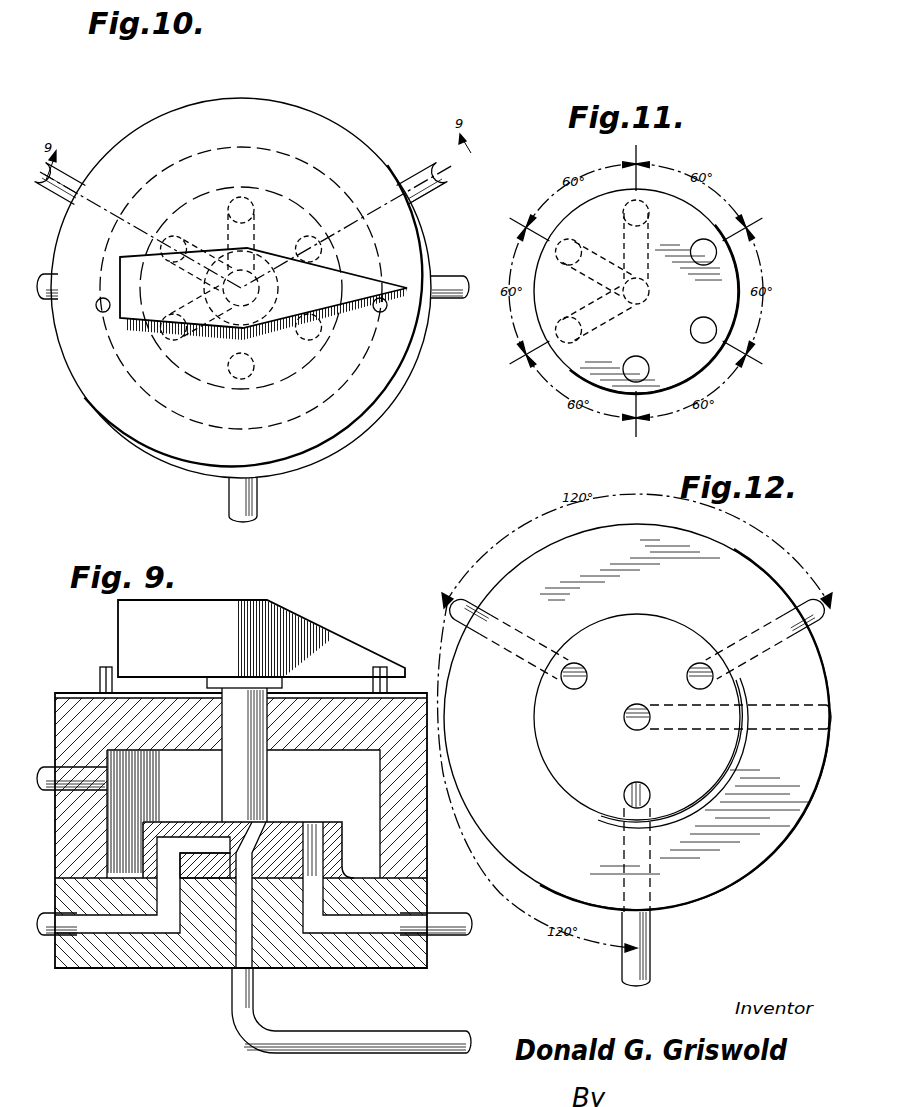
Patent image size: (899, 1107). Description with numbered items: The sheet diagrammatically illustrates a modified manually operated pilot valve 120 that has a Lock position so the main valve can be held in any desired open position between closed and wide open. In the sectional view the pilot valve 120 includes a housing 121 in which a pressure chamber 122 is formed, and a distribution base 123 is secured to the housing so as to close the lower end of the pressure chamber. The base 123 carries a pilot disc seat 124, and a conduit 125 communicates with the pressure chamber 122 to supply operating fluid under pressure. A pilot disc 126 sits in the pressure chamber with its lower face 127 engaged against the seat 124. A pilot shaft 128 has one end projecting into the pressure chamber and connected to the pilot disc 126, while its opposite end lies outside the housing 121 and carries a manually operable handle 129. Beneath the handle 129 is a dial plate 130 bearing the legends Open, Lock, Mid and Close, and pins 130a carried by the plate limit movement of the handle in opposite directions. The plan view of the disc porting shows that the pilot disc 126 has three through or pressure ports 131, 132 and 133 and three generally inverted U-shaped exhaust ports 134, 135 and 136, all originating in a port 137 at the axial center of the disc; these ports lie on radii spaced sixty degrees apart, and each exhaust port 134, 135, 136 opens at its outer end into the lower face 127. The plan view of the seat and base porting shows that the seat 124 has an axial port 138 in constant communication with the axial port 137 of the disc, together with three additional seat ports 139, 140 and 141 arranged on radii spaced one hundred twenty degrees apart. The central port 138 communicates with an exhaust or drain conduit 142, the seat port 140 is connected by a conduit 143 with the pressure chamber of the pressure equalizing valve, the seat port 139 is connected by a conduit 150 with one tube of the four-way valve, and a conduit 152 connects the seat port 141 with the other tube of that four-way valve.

In FIG. 10, the pilot valve 120 is at (275, 99).
In FIG. 9, the pilot valve 120 is at (334, 966).
In FIG. 10, the housing 121 is at (352, 441).
In FIG. 9, the housing 121 is at (427, 848).
In FIG. 10, the pressure chamber 122 is at (158, 404).
In FIG. 9, the pressure chamber 122 is at (380, 773).
In FIG. 12, the distribution base 123 is at (763, 848).
In FIG. 9, the distribution base 123 is at (427, 956).
In FIG. 12, the pilot disc seat 124 is at (682, 636).
In FIG. 9, the pilot disc seat 124 is at (340, 868).
In FIG. 10, the conduit 125 is at (58, 272).
In FIG. 9, the conduit 125 is at (54, 760).
In FIG. 10, the pilot disc 126 is at (226, 188).
In FIG. 11, the pilot disc 126 is at (662, 198).
In FIG. 9, the pilot disc 126 is at (206, 821).
In FIG. 9, the lower face 127 is at (163, 915).
In FIG. 10, the pilot shaft 128 is at (214, 343).
In FIG. 9, the pilot shaft 128 is at (268, 760).
In FIG. 10, the handle 129 is at (340, 266).
In FIG. 9, the handle 129 is at (322, 628).
In FIG. 10, the dial plate 130 is at (372, 153).
In FIG. 9, the dial plate 130 is at (412, 692).
In FIG. 10, the pins 130a is at (97, 308).
In FIG. 9, the pins 130a is at (105, 666).
In FIG. 10, the pressure port 131 is at (318, 235).
In FIG. 11, the pressure port 131 is at (696, 242).
In FIG. 9, the pressure port 131 is at (320, 822).
In FIG. 10, the pressure port 132 is at (312, 343).
In FIG. 11, the pressure port 132 is at (702, 318).
In FIG. 10, the pressure port 133 is at (255, 367).
In FIG. 11, the pressure port 133 is at (650, 366).
In FIG. 10, the exhaust port 134 is at (180, 342).
In FIG. 11, the exhaust port 134 is at (600, 335).
In FIG. 10, the exhaust port 135 is at (186, 240).
In FIG. 11, the exhaust port 135 is at (592, 282).
In FIG. 9, the exhaust port 135 is at (184, 836).
In FIG. 10, the exhaust port 136 is at (262, 200).
In FIG. 11, the exhaust port 136 is at (620, 232).
In FIG. 10, the axial port 137 is at (262, 290).
In FIG. 11, the axial port 137 is at (640, 302).
In FIG. 9, the axial port 137 is at (258, 850).
In FIG. 12, the axial port 138 is at (633, 726).
In FIG. 9, the axial port 138 is at (234, 968).
In FIG. 12, the seat port 139 is at (688, 680).
In FIG. 9, the seat port 139 is at (285, 950).
In FIG. 12, the seat port 140 is at (650, 795).
In FIG. 12, the seat port 141 is at (576, 689).
In FIG. 9, the seat port 141 is at (176, 904).
In FIG. 10, the exhaust conduit 142 is at (452, 276).
In FIG. 12, the exhaust conduit 142 is at (826, 734).
In FIG. 9, the exhaust conduit 142 is at (384, 1053).
In FIG. 10, the conduit 143 is at (258, 497).
In FIG. 12, the conduit 143 is at (650, 952).
In FIG. 10, the conduit 150 is at (436, 186).
In FIG. 12, the conduit 150 is at (803, 606).
In FIG. 9, the conduit 150 is at (450, 913).
In FIG. 10, the conduit 152 is at (74, 170).
In FIG. 12, the conduit 152 is at (474, 605).
In FIG. 9, the conduit 152 is at (50, 940).